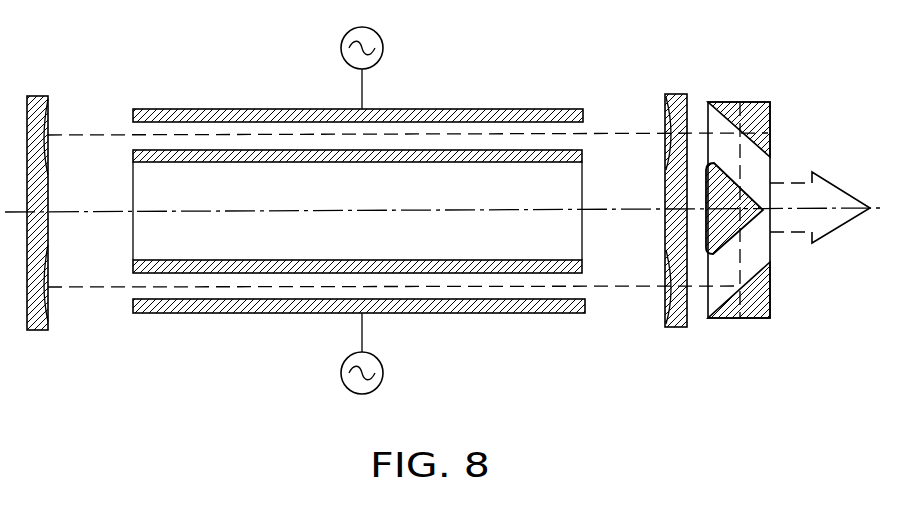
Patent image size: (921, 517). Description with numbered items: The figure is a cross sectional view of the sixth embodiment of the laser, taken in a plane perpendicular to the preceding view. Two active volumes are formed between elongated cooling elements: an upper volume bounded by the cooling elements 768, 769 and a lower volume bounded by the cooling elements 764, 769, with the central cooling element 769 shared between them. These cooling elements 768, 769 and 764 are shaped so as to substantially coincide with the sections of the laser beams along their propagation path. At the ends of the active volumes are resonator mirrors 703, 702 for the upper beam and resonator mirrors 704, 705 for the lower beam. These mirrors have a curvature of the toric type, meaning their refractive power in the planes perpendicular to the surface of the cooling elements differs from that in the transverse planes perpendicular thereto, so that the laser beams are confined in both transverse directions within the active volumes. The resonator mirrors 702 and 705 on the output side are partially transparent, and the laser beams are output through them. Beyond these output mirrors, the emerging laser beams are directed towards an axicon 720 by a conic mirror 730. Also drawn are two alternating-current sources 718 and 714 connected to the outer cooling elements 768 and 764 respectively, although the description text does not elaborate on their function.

The resonator mirror 703 is at (48, 122).
The resonator mirror 704 is at (48, 305).
The cooling element 768 is at (207, 109).
The cooling element 764 is at (210, 313).
The cooling element 769 is at (403, 261).
The AC power supply 718 is at (362, 90).
The AC power supply 714 is at (362, 330).
The resonator mirror 702 is at (667, 130).
The resonator mirror 705 is at (665, 290).
The axicon 720 is at (707, 170).
The conic mirror 730 is at (750, 108).